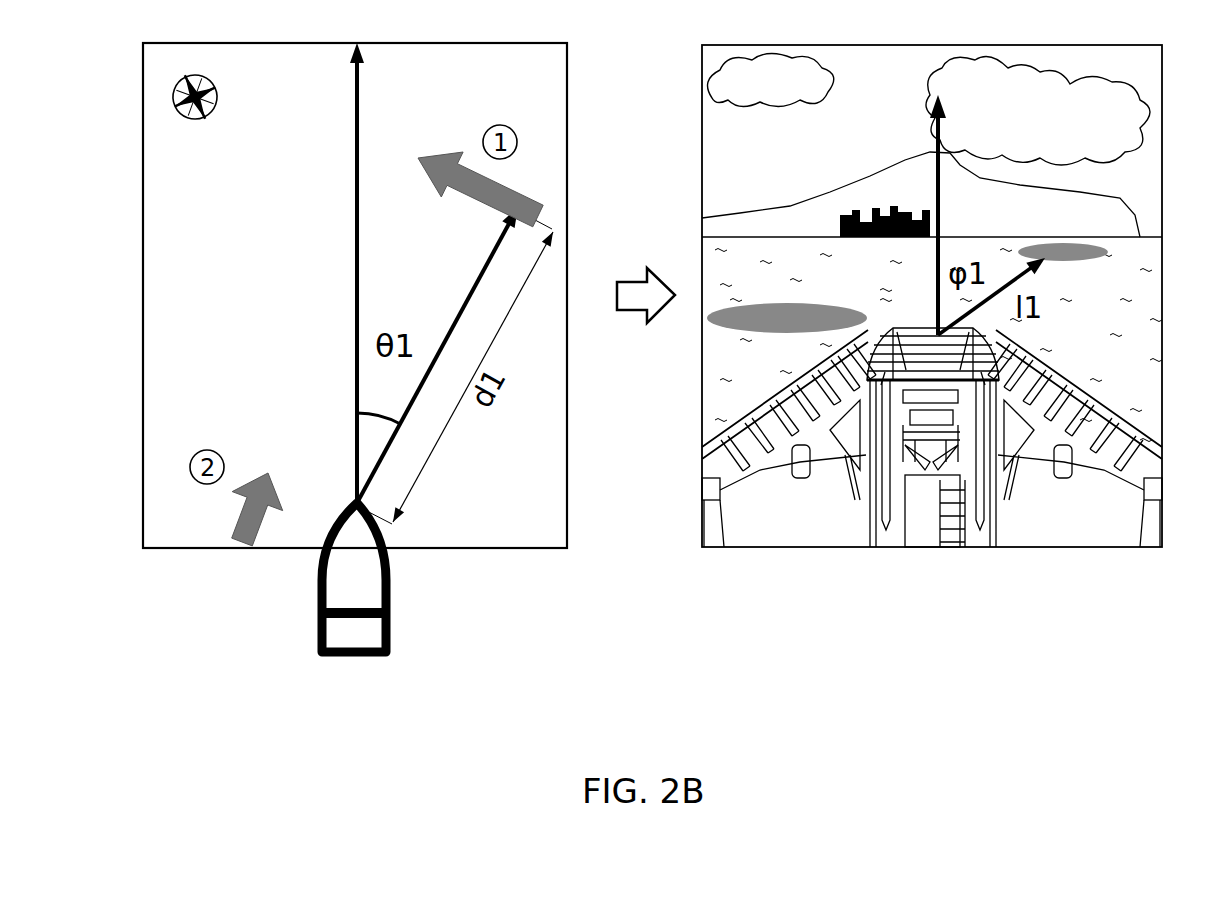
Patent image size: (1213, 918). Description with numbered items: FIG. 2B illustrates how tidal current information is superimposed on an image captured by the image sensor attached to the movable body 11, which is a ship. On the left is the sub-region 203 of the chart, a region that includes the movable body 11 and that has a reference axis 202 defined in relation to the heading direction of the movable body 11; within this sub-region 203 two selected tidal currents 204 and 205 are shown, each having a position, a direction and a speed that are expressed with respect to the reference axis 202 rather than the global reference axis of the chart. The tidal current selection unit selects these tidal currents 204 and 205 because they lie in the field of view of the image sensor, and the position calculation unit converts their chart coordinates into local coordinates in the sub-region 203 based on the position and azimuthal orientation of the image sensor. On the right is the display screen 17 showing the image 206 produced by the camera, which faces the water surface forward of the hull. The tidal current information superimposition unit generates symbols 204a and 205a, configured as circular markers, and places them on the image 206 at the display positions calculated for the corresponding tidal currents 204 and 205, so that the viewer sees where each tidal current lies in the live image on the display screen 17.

The movable body 11 is at (396, 620).
The display screen 17 is at (870, 45).
The reference axis 202 is at (230, 105).
The sub-region 203 is at (272, 43).
The tidal current 204 is at (482, 197).
The symbol 204a is at (1065, 244).
The tidal current 205 is at (268, 473).
The symbol 205a is at (787, 305).
The image 206 is at (883, 121).